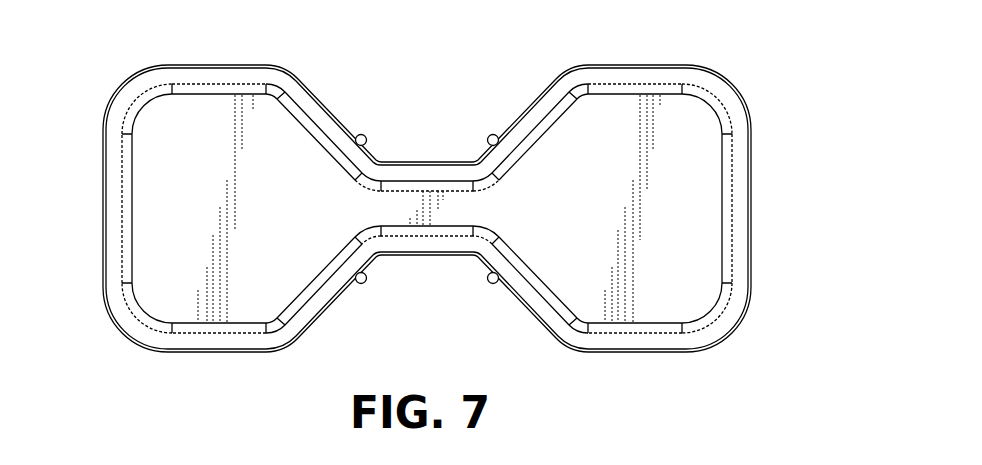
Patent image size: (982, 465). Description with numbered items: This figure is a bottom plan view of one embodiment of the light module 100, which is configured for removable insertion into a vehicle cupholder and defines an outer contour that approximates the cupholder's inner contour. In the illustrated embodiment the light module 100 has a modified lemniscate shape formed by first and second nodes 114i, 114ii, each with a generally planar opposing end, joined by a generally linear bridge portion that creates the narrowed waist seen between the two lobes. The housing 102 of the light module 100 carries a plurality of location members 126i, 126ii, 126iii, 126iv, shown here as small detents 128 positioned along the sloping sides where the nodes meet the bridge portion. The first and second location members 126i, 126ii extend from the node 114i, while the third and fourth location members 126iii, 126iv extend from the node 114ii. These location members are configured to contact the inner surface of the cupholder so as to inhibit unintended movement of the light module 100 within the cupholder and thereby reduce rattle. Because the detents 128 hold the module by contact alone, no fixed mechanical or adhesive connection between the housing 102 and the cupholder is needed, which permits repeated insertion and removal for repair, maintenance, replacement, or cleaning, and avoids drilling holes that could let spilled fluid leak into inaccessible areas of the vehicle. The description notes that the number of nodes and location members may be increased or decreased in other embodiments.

The light module 100 is at (790, 58).
The housing 102 is at (218, 60).
The first node 114i is at (218, 365).
The second node 114ii is at (613, 365).
The first location member 126i is at (364, 126).
The second location member 126ii is at (366, 300).
The third location member 126iii is at (488, 126).
The fourth location member 126iv is at (488, 300).
The detent 128 is at (486, 137).